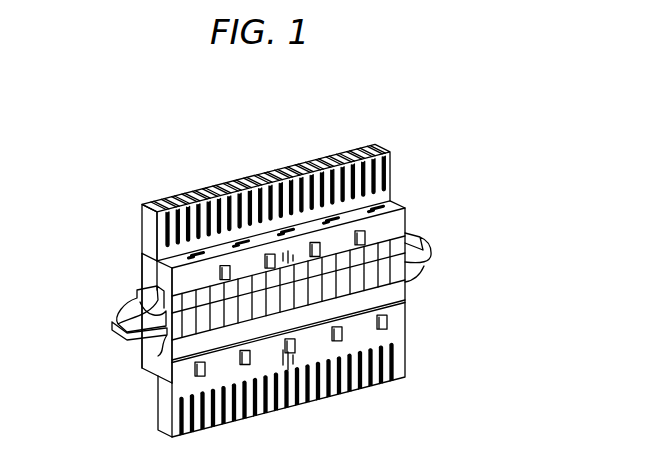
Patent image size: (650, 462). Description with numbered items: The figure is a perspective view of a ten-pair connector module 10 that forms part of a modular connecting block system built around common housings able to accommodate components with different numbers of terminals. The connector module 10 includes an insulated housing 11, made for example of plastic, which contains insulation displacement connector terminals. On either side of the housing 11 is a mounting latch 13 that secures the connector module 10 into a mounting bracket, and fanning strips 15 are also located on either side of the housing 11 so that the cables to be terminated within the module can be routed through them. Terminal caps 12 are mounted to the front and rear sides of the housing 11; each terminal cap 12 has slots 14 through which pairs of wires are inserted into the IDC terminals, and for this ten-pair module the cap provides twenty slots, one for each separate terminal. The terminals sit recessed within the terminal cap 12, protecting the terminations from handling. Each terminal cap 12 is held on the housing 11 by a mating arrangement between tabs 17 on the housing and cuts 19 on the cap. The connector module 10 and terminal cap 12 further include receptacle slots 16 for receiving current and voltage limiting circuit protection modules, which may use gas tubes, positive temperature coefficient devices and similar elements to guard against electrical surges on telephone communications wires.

The connector module 10 is at (155, 150).
The insulated housing 11 is at (149, 273).
The terminal cap 12 is at (400, 226).
The mounting latch 13 is at (137, 292).
The slots 14 is at (366, 150).
The fanning strips 15 is at (134, 340).
The receptacle slots 16 is at (393, 203).
The tabs 17 is at (195, 236).
The cuts 19 is at (226, 278).